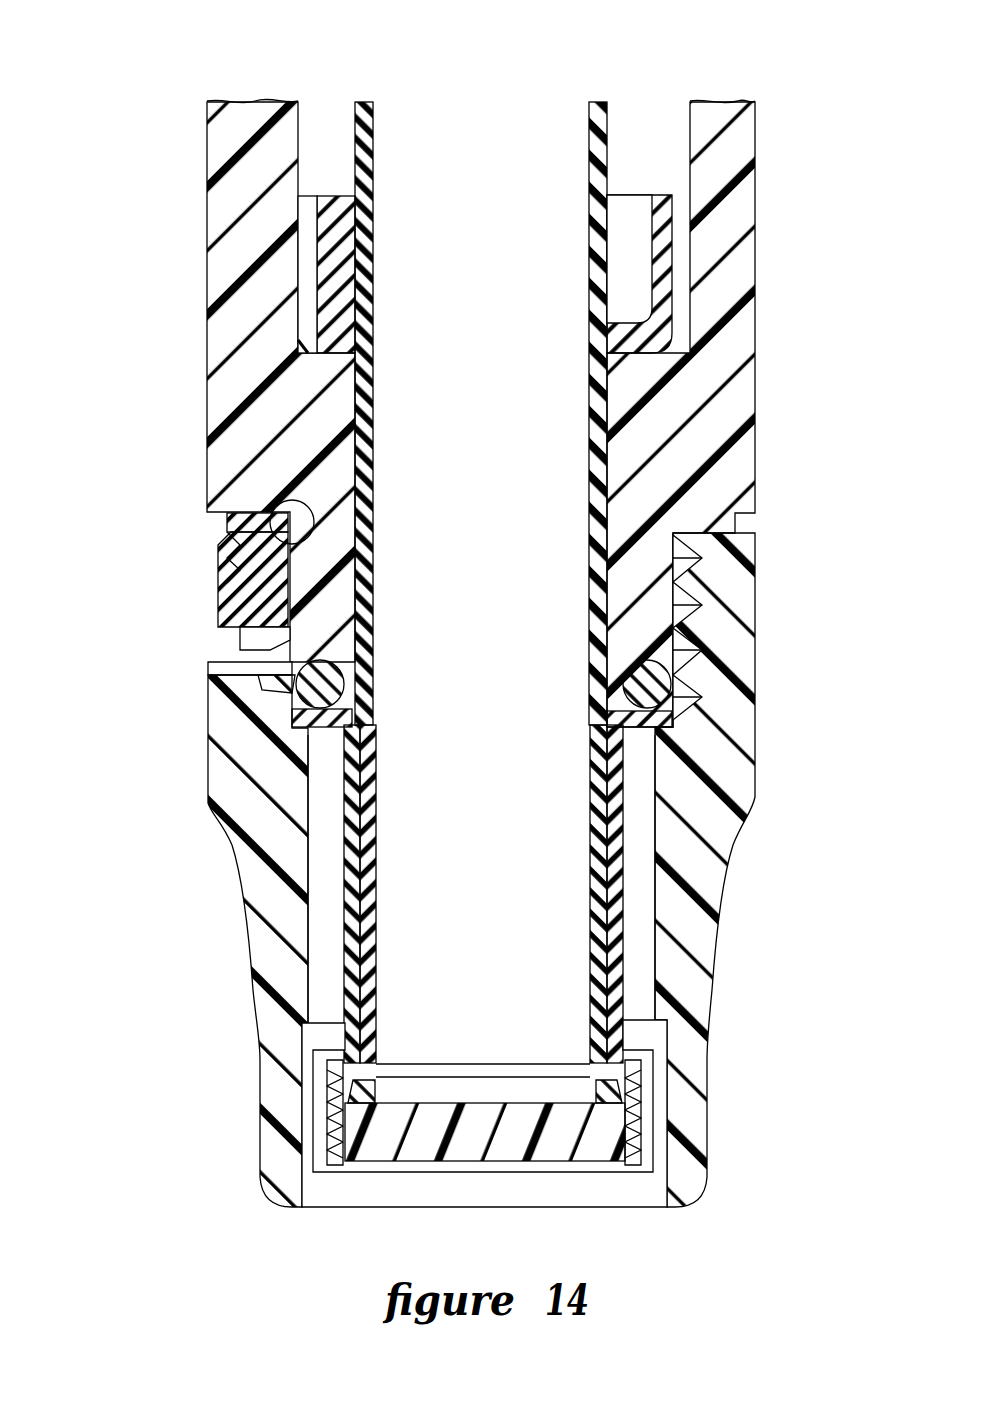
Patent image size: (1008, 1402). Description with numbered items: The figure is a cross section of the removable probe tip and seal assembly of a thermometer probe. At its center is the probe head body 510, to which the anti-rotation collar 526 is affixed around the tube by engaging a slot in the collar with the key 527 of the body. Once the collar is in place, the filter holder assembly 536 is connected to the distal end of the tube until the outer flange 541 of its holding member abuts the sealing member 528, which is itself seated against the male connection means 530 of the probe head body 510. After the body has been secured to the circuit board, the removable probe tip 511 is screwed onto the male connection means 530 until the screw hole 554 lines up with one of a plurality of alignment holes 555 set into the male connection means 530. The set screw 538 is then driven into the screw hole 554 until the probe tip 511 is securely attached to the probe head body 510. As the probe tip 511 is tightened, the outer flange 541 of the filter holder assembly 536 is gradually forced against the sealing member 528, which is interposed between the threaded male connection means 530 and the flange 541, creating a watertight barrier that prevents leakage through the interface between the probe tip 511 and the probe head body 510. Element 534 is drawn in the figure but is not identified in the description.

The probe head body 510 is at (196, 356).
The removable probe tip 511 is at (196, 920).
The anti-rotation collar 526 is at (620, 195).
The key 527 is at (312, 270).
The sealing member 528 is at (310, 723).
The male connection means 530 is at (265, 663).
The collet finger 534 is at (337, 193).
The filter holder assembly 536 is at (296, 990).
The set screw 538 is at (217, 560).
The outer flange 541 is at (657, 723).
The screw hole 554 is at (265, 625).
The alignment holes 555 is at (300, 502).